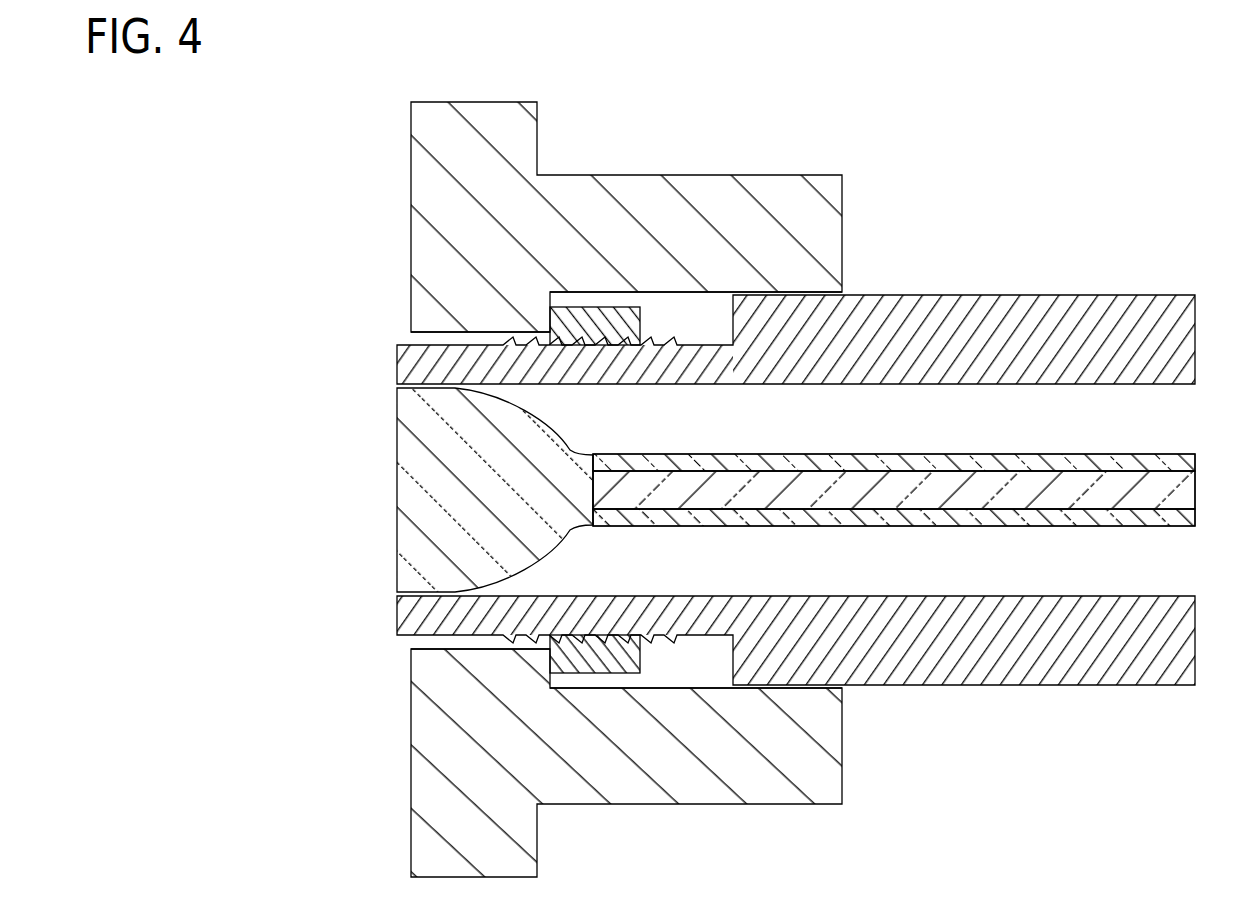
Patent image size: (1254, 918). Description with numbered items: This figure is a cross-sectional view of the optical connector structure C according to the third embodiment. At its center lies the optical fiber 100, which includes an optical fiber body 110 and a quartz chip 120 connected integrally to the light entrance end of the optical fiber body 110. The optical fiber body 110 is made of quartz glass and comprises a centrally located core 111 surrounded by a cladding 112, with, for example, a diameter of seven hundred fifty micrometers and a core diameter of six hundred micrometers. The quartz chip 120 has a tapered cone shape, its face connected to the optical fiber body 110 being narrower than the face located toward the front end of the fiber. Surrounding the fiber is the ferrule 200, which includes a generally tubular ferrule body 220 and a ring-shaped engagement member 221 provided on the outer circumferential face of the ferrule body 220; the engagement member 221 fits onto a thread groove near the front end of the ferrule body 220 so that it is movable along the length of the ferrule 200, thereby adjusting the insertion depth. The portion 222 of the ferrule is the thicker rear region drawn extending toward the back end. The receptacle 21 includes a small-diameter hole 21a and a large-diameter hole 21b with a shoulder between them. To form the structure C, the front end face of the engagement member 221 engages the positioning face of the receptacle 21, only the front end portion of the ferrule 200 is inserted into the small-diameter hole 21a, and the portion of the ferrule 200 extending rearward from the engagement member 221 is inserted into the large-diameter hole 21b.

The optical connector structure C is at (296, 167).
The receptacle 21 is at (424, 243).
The small-diameter hole 21a is at (417, 342).
The large-diameter hole 21b is at (678, 297).
The optical fiber 100 is at (1156, 452).
The optical fiber body 110 is at (1053, 558).
The core 111 is at (930, 498).
The cladding 112 is at (888, 460).
The quartz chip 120 is at (405, 483).
The ferrule 200 is at (1157, 294).
The ferrule body 220 is at (697, 386).
The engagement member 221 is at (642, 322).
The thick portion 222 is at (1020, 312).